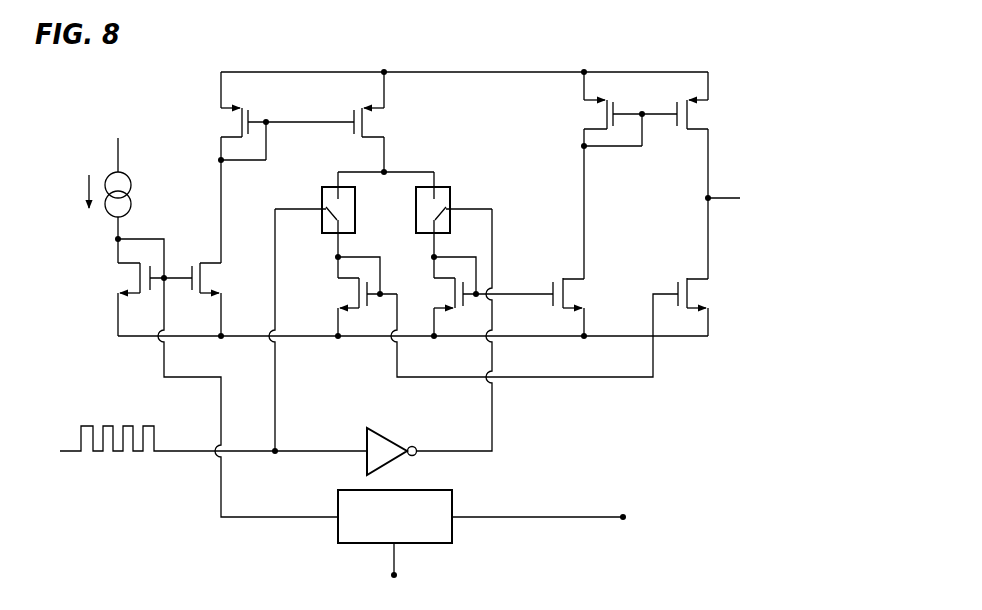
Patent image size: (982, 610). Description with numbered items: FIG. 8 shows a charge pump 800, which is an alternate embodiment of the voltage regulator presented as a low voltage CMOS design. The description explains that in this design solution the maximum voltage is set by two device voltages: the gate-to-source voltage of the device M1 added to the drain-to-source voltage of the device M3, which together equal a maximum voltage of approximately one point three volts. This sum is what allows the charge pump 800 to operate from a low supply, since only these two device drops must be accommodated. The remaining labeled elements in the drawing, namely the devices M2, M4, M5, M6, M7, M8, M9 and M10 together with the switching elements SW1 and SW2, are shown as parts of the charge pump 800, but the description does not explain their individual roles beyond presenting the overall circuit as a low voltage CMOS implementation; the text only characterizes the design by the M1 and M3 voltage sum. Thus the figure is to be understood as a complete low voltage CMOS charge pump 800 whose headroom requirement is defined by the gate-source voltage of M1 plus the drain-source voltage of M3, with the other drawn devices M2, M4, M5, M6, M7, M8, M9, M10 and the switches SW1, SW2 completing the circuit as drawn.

The charge pump 800 is at (170, 548).
The transistor M1 is at (583, 114).
The PMOS transistor M2 is at (710, 114).
The transistor M3 is at (587, 293).
The NMOS transistor M4 is at (711, 293).
The PMOS transistor M5 is at (217, 122).
The PMOS transistor M6 is at (386, 122).
The NMOS transistor M7 is at (118, 299).
The NMOS transistor M8 is at (222, 278).
The NMOS transistor M9 is at (334, 307).
The NMOS transistor M10 is at (431, 307).
The switch SW1 is at (339, 225).
The switch SW2 is at (454, 219).